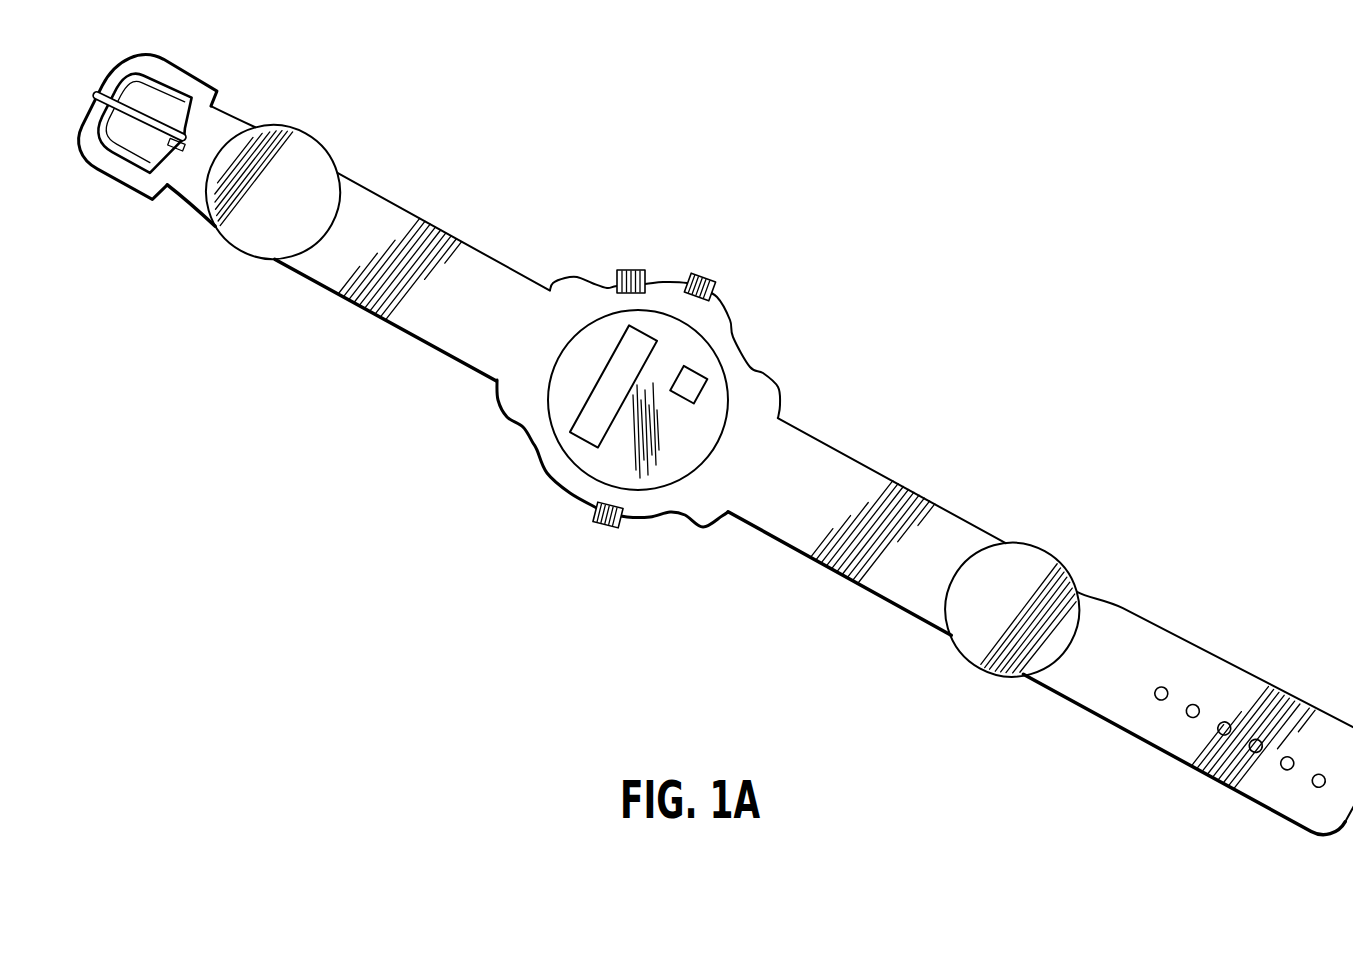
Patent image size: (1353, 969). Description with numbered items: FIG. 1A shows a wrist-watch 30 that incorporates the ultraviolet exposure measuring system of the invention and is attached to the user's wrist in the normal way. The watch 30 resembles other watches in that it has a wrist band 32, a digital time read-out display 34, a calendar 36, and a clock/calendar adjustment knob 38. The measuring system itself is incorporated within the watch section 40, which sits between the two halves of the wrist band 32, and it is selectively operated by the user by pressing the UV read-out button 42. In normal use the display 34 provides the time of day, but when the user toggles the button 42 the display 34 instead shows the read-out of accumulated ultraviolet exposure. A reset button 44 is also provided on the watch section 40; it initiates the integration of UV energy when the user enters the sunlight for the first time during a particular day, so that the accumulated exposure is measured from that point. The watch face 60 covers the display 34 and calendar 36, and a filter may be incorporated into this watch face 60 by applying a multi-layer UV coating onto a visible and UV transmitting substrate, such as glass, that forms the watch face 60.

The watch 30 is at (307, 614).
The wrist band 32 is at (450, 316).
The digital time read-out display 34 is at (580, 412).
The calendar 36 is at (697, 370).
The clock/calendar adjustment knob 38 is at (703, 277).
The watch section 40 is at (688, 456).
The UV read-out button 42 is at (631, 270).
The reset button 44 is at (617, 528).
The watch face 60 is at (727, 410).